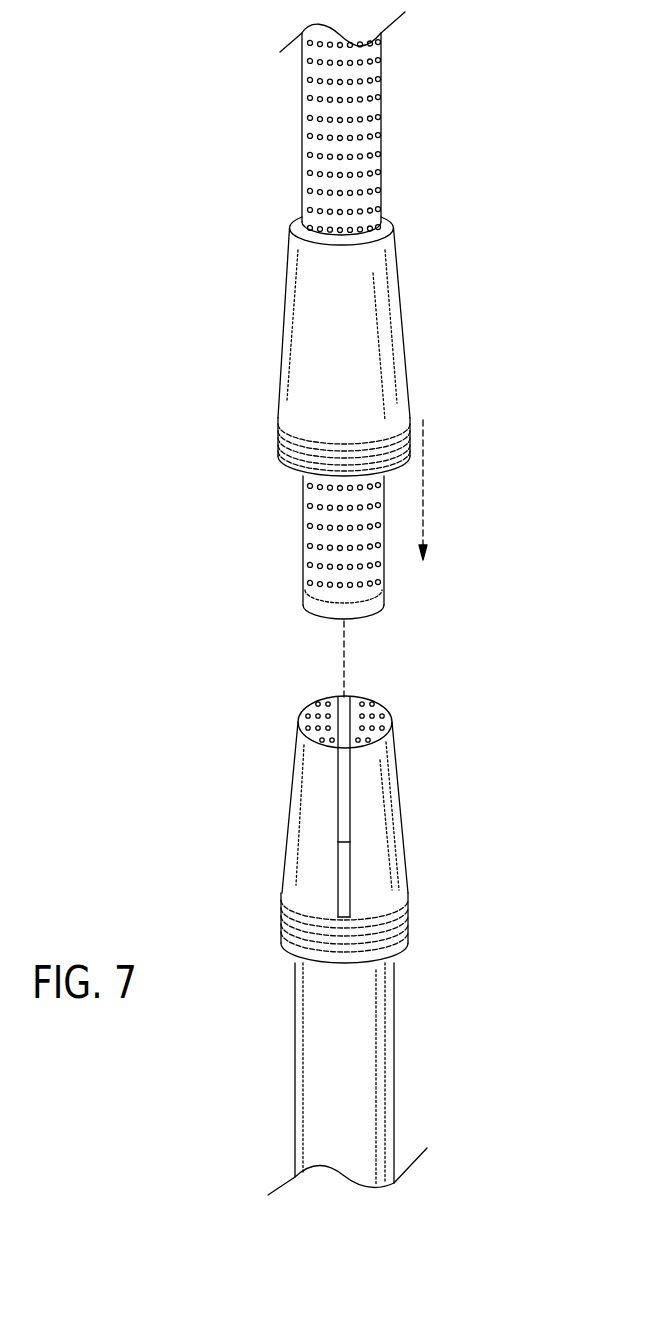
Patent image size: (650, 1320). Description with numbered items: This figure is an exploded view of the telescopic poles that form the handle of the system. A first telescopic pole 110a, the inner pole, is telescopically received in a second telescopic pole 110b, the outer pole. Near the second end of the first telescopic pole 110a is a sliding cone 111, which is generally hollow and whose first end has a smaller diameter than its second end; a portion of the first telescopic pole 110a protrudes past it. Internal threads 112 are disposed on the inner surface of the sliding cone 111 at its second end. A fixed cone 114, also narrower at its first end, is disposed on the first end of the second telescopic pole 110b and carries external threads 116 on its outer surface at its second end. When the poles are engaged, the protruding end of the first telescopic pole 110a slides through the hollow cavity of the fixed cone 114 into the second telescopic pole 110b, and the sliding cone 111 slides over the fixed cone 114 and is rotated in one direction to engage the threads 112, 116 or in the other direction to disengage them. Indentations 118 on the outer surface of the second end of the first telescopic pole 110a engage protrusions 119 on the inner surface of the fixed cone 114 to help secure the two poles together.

The first telescopic pole 110a is at (383, 120).
The sliding cone 111 is at (388, 335).
The internal threads 112 is at (282, 425).
The indentations 118 is at (307, 530).
The protrusions 119 is at (305, 710).
The fixed cone 114 is at (387, 782).
The external threads 116 is at (407, 908).
The second telescopic pole 110b is at (376, 1008).